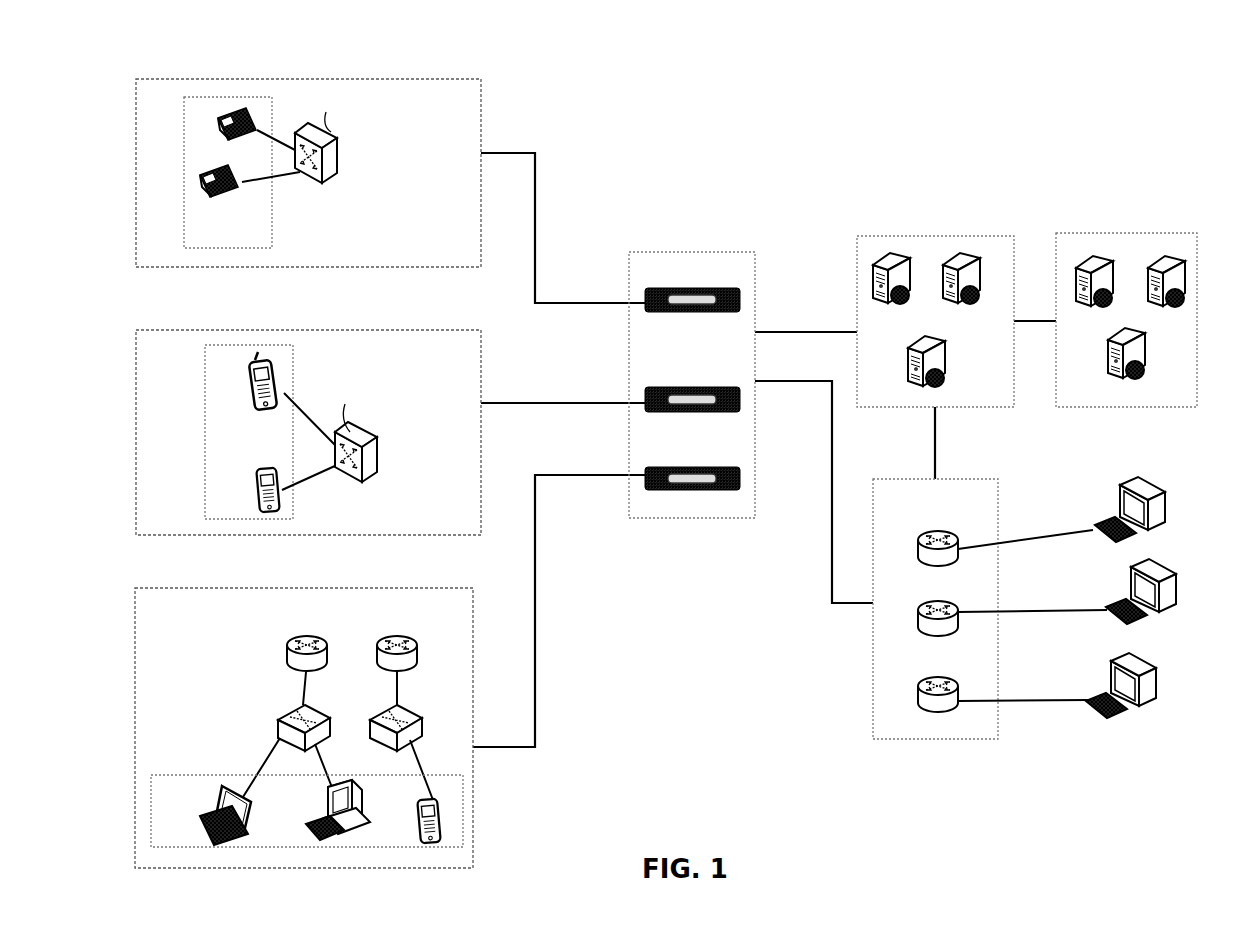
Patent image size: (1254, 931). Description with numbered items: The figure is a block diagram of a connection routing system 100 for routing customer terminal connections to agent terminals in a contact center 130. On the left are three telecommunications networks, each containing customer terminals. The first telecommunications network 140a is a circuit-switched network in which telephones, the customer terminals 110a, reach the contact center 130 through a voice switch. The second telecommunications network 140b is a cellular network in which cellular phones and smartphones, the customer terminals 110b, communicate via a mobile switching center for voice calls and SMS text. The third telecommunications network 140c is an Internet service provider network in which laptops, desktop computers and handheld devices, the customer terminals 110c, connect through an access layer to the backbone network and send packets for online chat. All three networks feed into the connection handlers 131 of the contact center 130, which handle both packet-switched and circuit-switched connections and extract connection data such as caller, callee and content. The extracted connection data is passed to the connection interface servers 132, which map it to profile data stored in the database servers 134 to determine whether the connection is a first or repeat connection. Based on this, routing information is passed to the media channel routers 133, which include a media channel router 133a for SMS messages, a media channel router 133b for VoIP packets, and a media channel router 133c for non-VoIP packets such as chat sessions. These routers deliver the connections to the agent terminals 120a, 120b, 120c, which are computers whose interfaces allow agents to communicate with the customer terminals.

The connection routing system 100 is at (764, 427).
The customer terminal 110a is at (228, 172).
The customer terminal 110b is at (249, 432).
The customer terminal 110c is at (307, 811).
The agent terminal 120a is at (1164, 494).
The agent terminal 120b is at (1176, 576).
The agent terminal 120c is at (1156, 668).
The contact center 130 is at (1043, 618).
The connection handlers 131 is at (755, 252).
The connection interface servers 132 is at (898, 236).
The media channel routers 133 is at (912, 752).
The media channel router 133a is at (958, 535).
The media channel router 133b is at (956, 607).
The media channel router 133c is at (958, 684).
The database servers 134 is at (1126, 233).
The telecommunications network 140a is at (296, 78).
The telecommunications network 140b is at (292, 330).
The telecommunications network 140c is at (302, 588).